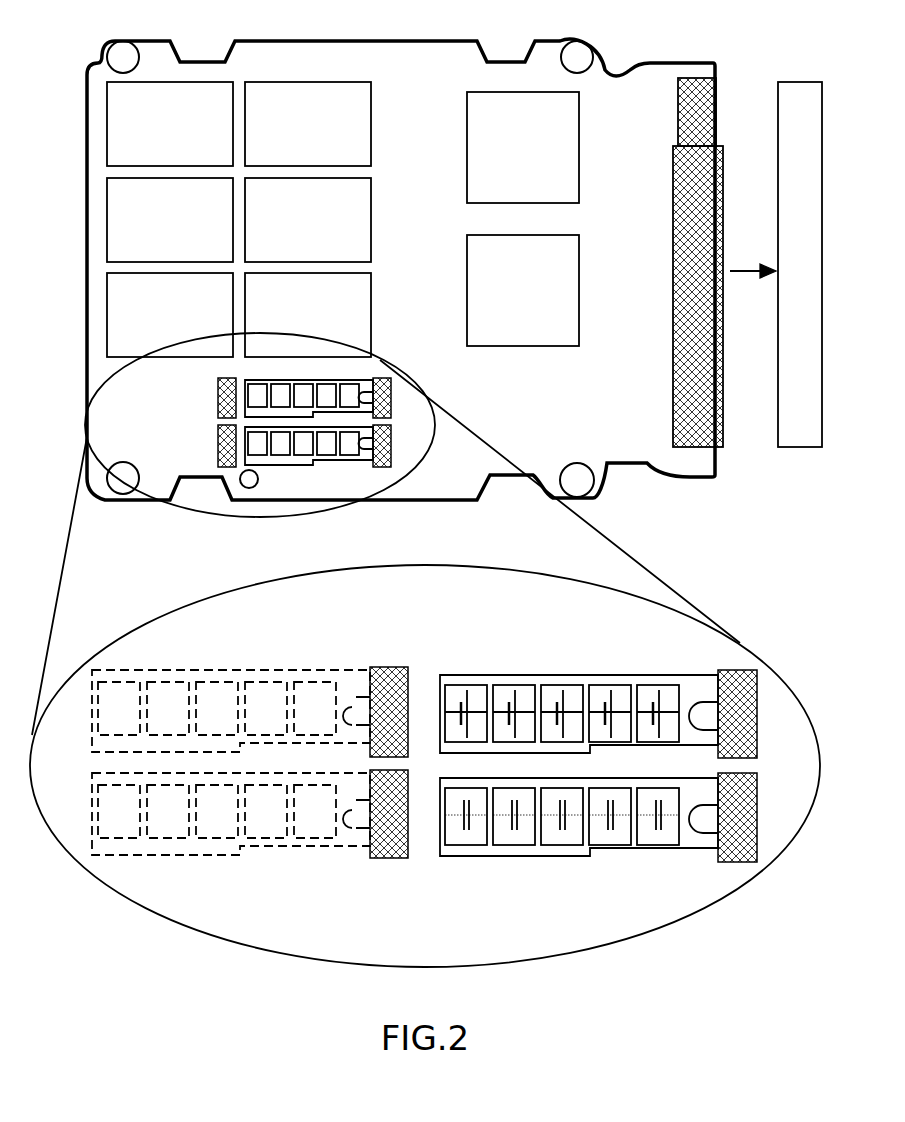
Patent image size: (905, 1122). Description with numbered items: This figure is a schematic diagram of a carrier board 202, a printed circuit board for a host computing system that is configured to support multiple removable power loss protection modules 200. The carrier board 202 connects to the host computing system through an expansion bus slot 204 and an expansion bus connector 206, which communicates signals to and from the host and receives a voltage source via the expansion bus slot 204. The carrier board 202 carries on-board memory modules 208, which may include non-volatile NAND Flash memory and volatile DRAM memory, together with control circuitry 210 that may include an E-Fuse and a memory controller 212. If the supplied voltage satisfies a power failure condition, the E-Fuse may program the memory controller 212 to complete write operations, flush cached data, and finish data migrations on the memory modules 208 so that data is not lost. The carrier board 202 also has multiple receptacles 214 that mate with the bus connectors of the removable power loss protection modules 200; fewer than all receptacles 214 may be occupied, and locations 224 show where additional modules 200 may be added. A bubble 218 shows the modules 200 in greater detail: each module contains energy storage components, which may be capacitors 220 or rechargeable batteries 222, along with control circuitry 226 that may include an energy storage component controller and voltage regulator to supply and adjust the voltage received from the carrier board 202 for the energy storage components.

The removable power loss protection module 200 is at (365, 380).
The carrier board 202 is at (318, 40).
The expansion bus slot 204 is at (800, 82).
The expansion bus connector 206 is at (675, 266).
The on-board memory module 208 is at (239, 219).
The control circuitry 210 is at (523, 290).
The memory controller 212 is at (523, 147).
The receptacle 214 is at (218, 398).
The bubble 218 is at (115, 368).
The capacitors 220 is at (652, 845).
The rechargeable batteries 222 is at (657, 683).
The locations 224 is at (245, 668).
The control circuitry 226 is at (707, 700).